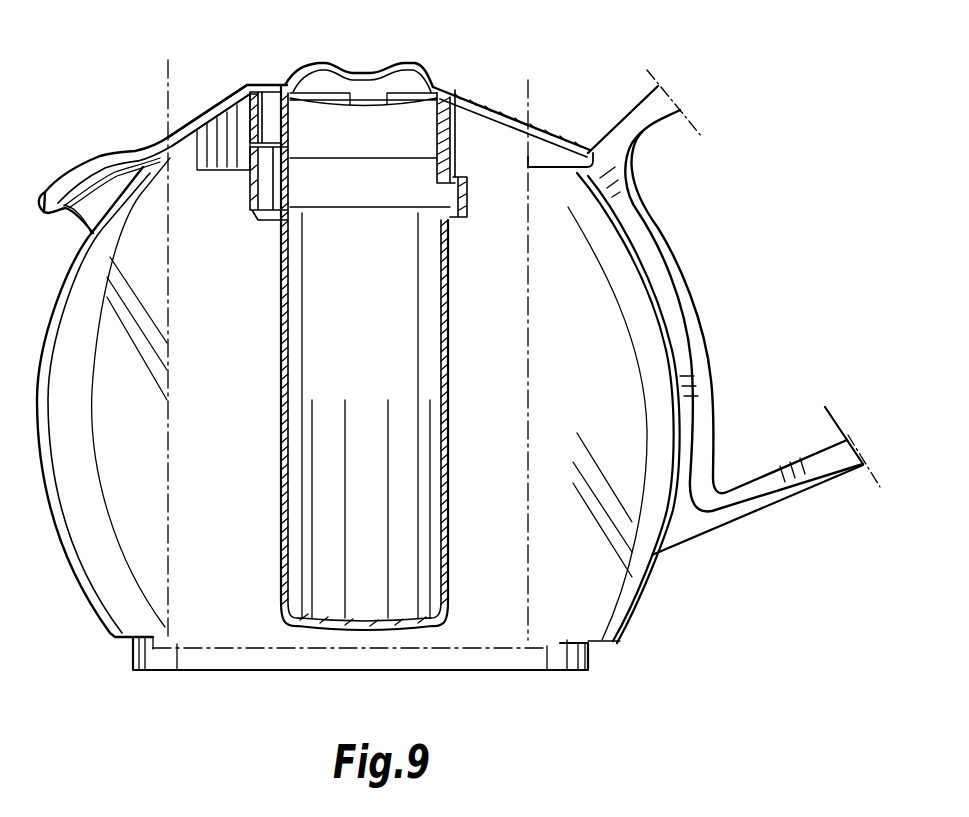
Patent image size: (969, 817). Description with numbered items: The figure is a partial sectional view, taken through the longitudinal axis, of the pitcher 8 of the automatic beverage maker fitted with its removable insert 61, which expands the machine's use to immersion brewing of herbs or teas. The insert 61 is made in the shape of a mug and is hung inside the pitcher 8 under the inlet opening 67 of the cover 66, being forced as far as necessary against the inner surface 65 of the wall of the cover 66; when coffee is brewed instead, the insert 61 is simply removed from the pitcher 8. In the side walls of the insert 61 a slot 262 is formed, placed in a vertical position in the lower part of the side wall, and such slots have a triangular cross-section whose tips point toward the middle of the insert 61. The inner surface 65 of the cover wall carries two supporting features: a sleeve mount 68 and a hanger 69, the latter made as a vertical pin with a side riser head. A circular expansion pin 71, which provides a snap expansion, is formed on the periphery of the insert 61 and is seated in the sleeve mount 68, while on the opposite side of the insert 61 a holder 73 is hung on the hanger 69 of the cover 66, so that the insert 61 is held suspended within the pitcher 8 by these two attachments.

The pitcher 8 is at (128, 445).
The insert 61 is at (285, 360).
The slot 262 is at (342, 480).
The inner surface 65 is at (487, 99).
The cover 66 is at (230, 86).
The inlet opening 67 is at (363, 67).
The sleeve mount 68 is at (258, 96).
The hanger 69 is at (478, 86).
The expansion pin 71 is at (252, 217).
The holder 73 is at (468, 217).